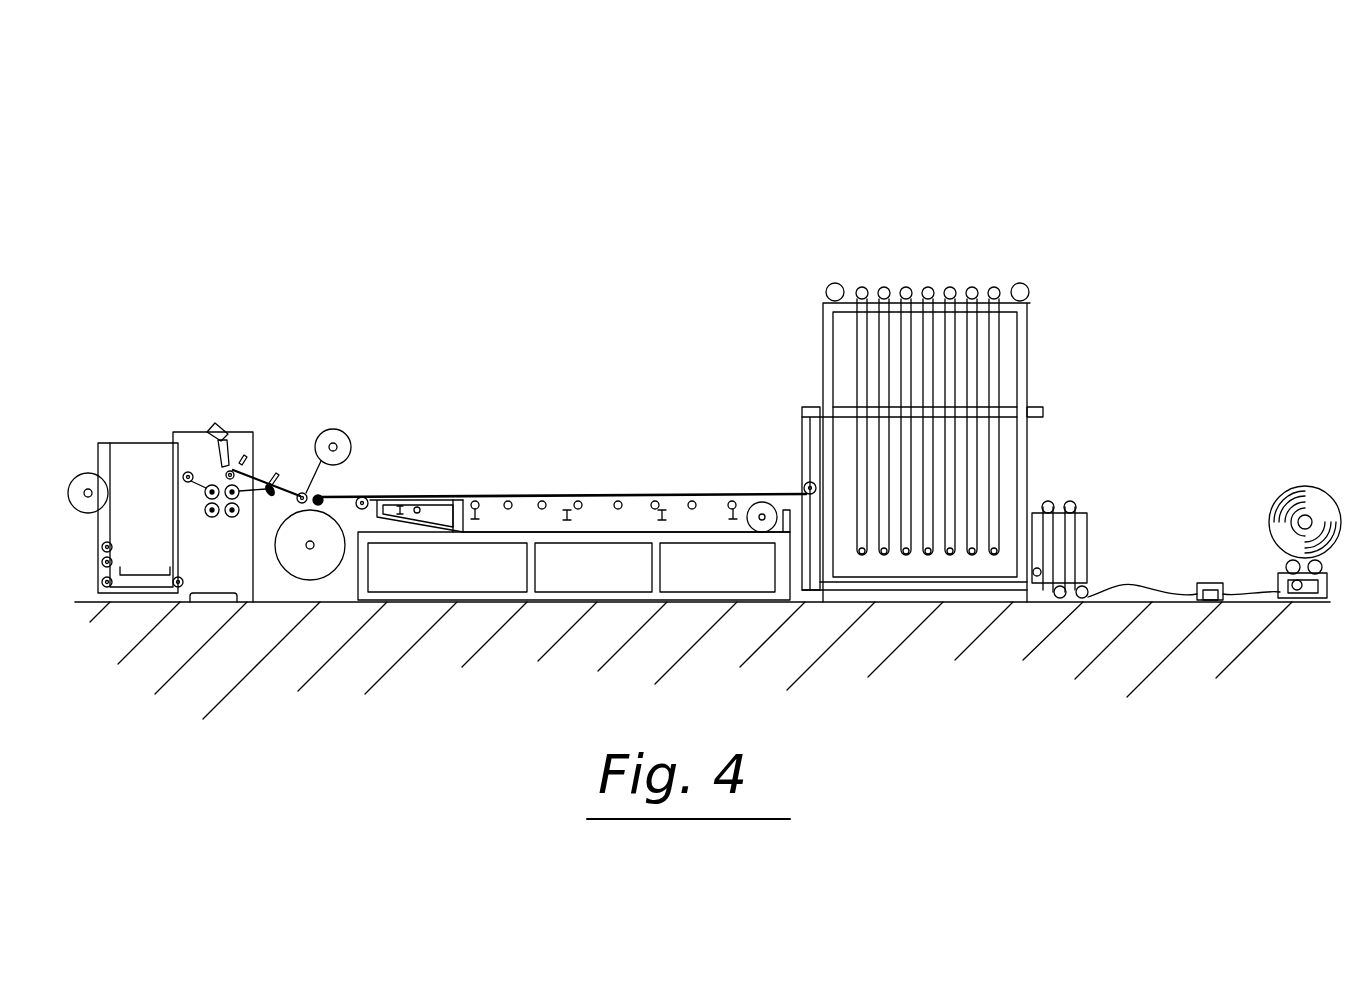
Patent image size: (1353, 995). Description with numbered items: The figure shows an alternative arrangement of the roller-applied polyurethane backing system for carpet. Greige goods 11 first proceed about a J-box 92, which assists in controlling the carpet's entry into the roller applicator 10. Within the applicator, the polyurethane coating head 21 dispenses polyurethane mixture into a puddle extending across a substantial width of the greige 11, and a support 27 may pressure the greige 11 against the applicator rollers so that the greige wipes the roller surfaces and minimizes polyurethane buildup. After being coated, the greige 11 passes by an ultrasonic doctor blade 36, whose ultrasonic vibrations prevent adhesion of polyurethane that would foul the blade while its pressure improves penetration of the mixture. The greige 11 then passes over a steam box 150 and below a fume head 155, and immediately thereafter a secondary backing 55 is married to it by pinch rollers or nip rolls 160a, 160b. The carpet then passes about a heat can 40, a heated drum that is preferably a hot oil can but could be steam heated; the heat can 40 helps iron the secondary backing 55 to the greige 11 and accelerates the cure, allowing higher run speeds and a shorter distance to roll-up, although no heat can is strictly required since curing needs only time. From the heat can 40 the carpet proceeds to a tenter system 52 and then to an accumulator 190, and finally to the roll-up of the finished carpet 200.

The roller applicator 10 is at (190, 455).
The greige 11 is at (78, 474).
The J-box 92 is at (148, 560).
The polyurethane coating head 21 is at (230, 450).
The ultrasonic doctor blade 36 is at (229, 457).
The steam box 150 is at (275, 472).
The fume head 155 is at (272, 486).
The nip roll 160a is at (299, 487).
The nip roll 160b is at (325, 491).
The secondary backing 55 is at (350, 437).
The tenter system 52 is at (634, 490).
The heat can 40 is at (318, 580).
The support 27 is at (228, 518).
The accumulator 190 is at (957, 272).
The roll-up of the finished carpet 200 is at (1292, 482).